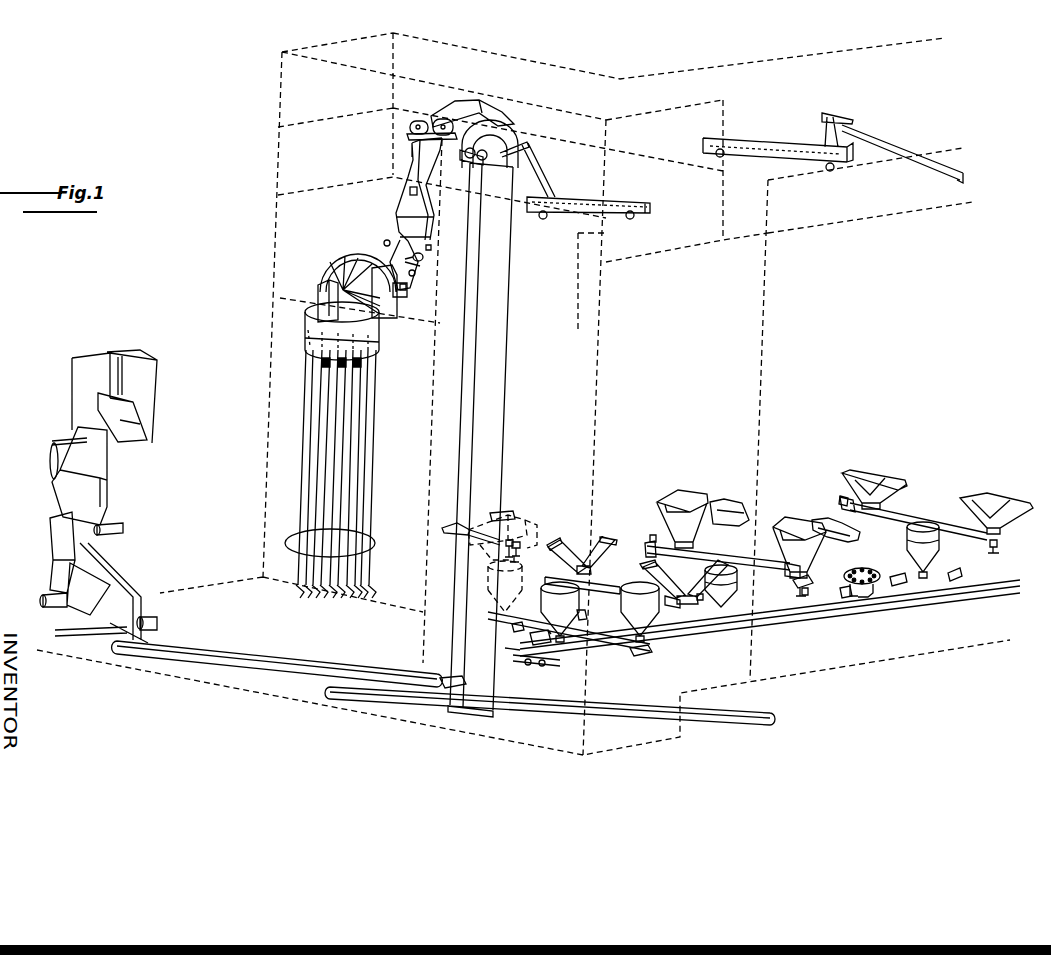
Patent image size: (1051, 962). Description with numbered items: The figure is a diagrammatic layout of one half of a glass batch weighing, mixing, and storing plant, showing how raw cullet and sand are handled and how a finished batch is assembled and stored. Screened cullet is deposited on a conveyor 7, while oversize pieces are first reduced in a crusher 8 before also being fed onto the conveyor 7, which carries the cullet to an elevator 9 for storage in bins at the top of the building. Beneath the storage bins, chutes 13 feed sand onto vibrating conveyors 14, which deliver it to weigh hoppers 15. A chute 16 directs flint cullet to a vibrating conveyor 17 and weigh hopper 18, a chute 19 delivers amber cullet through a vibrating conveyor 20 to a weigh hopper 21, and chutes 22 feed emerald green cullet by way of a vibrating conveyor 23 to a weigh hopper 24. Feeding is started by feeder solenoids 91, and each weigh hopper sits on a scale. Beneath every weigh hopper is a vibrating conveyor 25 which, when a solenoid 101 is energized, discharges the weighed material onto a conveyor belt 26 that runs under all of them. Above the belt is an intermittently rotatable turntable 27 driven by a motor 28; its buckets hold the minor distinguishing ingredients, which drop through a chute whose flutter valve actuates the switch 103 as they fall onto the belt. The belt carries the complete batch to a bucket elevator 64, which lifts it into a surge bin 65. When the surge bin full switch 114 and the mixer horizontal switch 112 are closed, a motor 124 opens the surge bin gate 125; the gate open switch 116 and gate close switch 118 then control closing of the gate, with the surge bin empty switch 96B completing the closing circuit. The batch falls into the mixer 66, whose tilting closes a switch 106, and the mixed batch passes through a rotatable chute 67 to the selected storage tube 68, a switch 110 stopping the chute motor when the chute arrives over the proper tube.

The conveyor 7 is at (233, 651).
The crusher 8 is at (102, 505).
The elevator 9 is at (497, 465).
The chutes 13 is at (698, 507).
The vibrating conveyors 14 is at (743, 554).
The weigh hoppers 15 is at (822, 564).
The chute 16 is at (655, 573).
The vibrating conveyor 17 is at (665, 601).
The weigh hopper 18 is at (640, 612).
The chute 19 is at (563, 547).
The vibrating conveyor 20 is at (583, 594).
The weigh hopper 21 is at (560, 612).
The chutes 22 is at (507, 517).
The vibrating conveyor 23 is at (517, 560).
The weigh hopper 24 is at (510, 585).
The vibrating conveyor 25 is at (516, 625).
The conveyor belt 26 is at (798, 620).
The turntable 27 is at (875, 569).
The motor 28 is at (872, 594).
The bucket elevator 64 is at (448, 466).
The surge bin 65 is at (410, 200).
The mixer 66 is at (357, 270).
The chute 67 is at (310, 340).
The storage tube 68 is at (368, 407).
The feeder solenoids 91 is at (515, 531).
The surge bin empty switch 96B is at (430, 237).
The solenoid 101 is at (506, 637).
The switch 103 is at (850, 591).
The switch 106 is at (368, 317).
The switch 110 is at (373, 342).
The mixer horizontal switch 112 is at (407, 288).
The surge bin full switch 114 is at (432, 247).
The gate open switch 116 is at (415, 274).
The gate close switch 118 is at (385, 241).
The motor 124 is at (424, 258).
The surge bin gate 125 is at (421, 266).